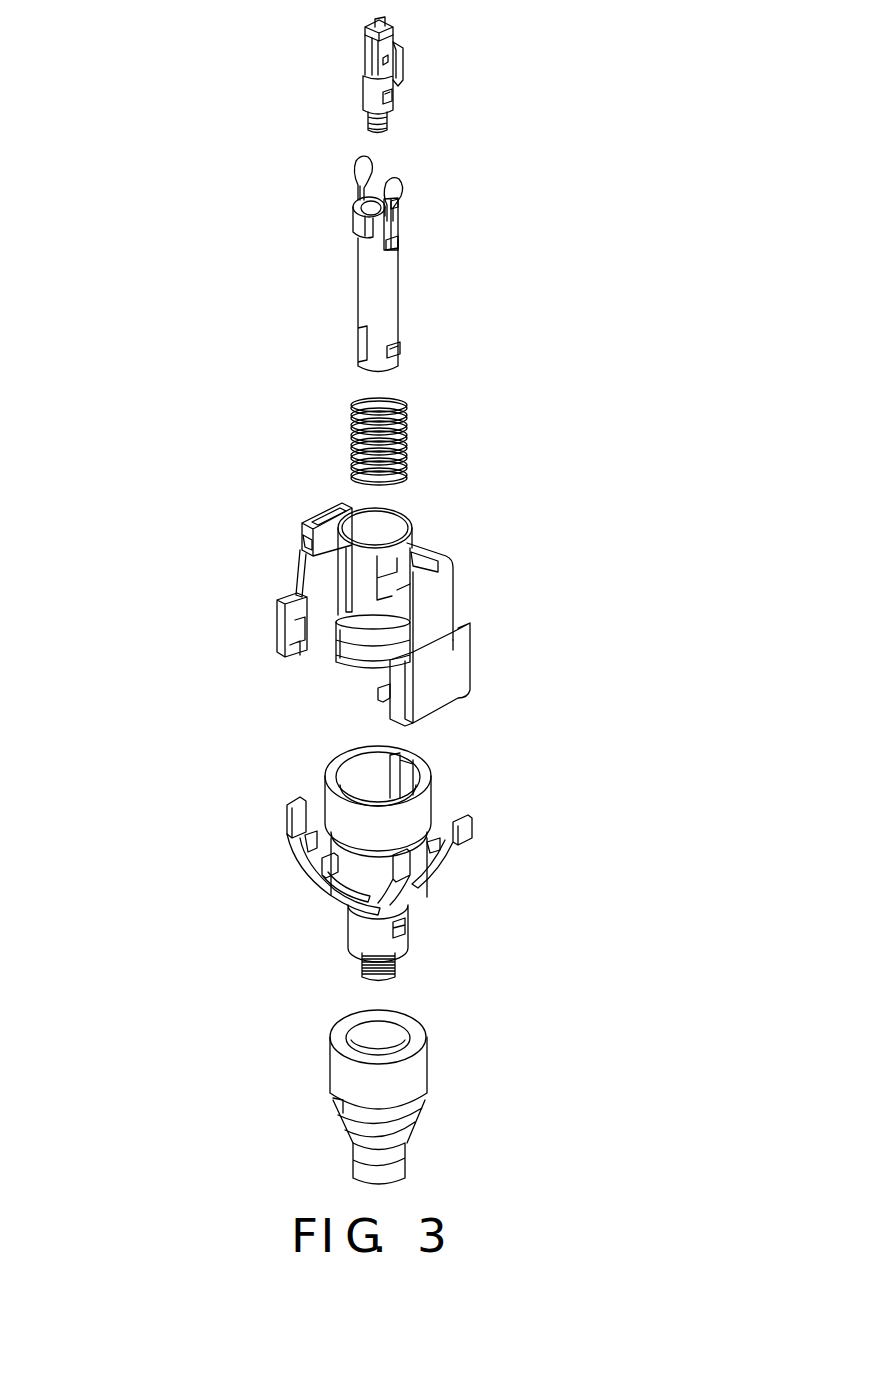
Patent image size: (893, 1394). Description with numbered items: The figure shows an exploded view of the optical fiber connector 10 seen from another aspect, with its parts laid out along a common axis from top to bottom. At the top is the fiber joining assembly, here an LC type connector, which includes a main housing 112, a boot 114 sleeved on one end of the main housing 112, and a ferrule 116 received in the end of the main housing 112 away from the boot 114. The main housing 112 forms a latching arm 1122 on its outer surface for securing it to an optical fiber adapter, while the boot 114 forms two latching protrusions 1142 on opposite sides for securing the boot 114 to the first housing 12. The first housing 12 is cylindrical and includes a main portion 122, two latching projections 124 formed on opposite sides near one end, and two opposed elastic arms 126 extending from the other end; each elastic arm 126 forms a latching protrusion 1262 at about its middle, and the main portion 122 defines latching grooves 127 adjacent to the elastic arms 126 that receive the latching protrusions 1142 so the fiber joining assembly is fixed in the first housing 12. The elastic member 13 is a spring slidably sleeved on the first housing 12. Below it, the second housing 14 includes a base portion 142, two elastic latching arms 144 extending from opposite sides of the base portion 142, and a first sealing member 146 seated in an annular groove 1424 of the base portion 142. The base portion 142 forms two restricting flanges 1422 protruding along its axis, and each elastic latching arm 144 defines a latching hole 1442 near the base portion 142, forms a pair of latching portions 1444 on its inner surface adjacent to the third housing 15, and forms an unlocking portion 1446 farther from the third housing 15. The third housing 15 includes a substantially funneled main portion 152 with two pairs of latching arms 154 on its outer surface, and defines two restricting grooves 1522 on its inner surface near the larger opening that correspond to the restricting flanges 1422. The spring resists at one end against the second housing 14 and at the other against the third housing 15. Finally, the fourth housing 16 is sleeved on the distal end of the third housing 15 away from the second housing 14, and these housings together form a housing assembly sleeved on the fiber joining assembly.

The optical fiber connector 10 is at (185, 305).
The main housing 112 is at (378, 57).
The boot 114 is at (372, 97).
The ferrule 116 is at (372, 21).
The latching arm 1122 is at (404, 68).
The latching protrusion 1142 is at (393, 96).
The first housing 12 is at (340, 268).
The main portion 122 is at (388, 295).
The latching projection 124 is at (400, 352).
The elastic arm 126 is at (395, 228).
The latching protrusion 1262 is at (400, 204).
The latching groove 127 is at (393, 240).
The elastic member 13 is at (410, 430).
The second housing 14 is at (452, 526).
The base portion 142 is at (373, 600).
The restricting flange 1422 is at (337, 583).
The annular groove 1424 is at (353, 660).
The elastic latching arm 144 is at (313, 585).
The latching hole 1442 is at (333, 520).
The latching portion 1444 is at (290, 643).
The unlocking portion 1446 is at (313, 548).
The first sealing member 146 is at (380, 652).
The third housing 15 is at (551, 783).
The main portion 152 is at (415, 815).
The restricting groove 1522 is at (405, 762).
The latching arm 154 is at (453, 855).
The fourth housing 16 is at (407, 1077).